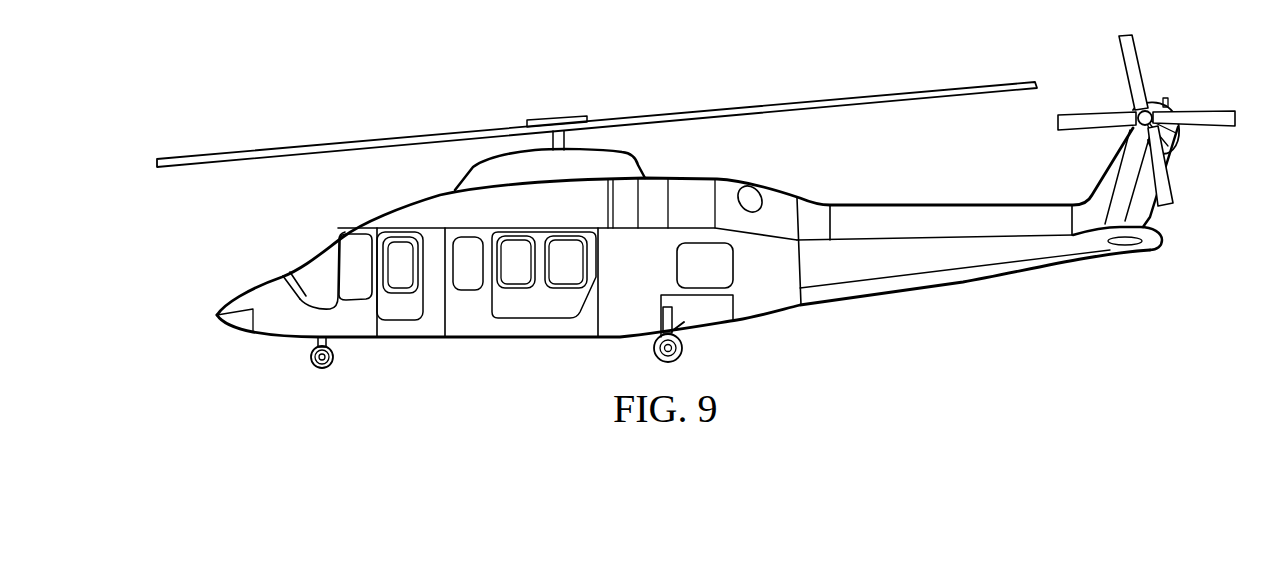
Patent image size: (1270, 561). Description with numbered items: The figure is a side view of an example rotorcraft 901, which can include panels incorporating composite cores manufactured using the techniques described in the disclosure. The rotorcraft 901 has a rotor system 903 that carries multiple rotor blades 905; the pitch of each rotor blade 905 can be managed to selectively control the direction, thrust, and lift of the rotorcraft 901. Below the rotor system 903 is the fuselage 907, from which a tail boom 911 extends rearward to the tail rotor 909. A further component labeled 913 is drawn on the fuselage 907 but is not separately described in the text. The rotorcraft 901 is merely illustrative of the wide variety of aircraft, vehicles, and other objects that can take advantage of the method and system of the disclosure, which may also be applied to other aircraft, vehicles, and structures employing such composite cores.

The rotorcraft 901 is at (395, 64).
The rotor system 903 is at (562, 97).
The rotor blade 905 is at (268, 150).
The fuselage 907 is at (460, 338).
The tail rotor 909 is at (1194, 77).
The tail boom 911 is at (960, 283).
The window 913 is at (752, 280).